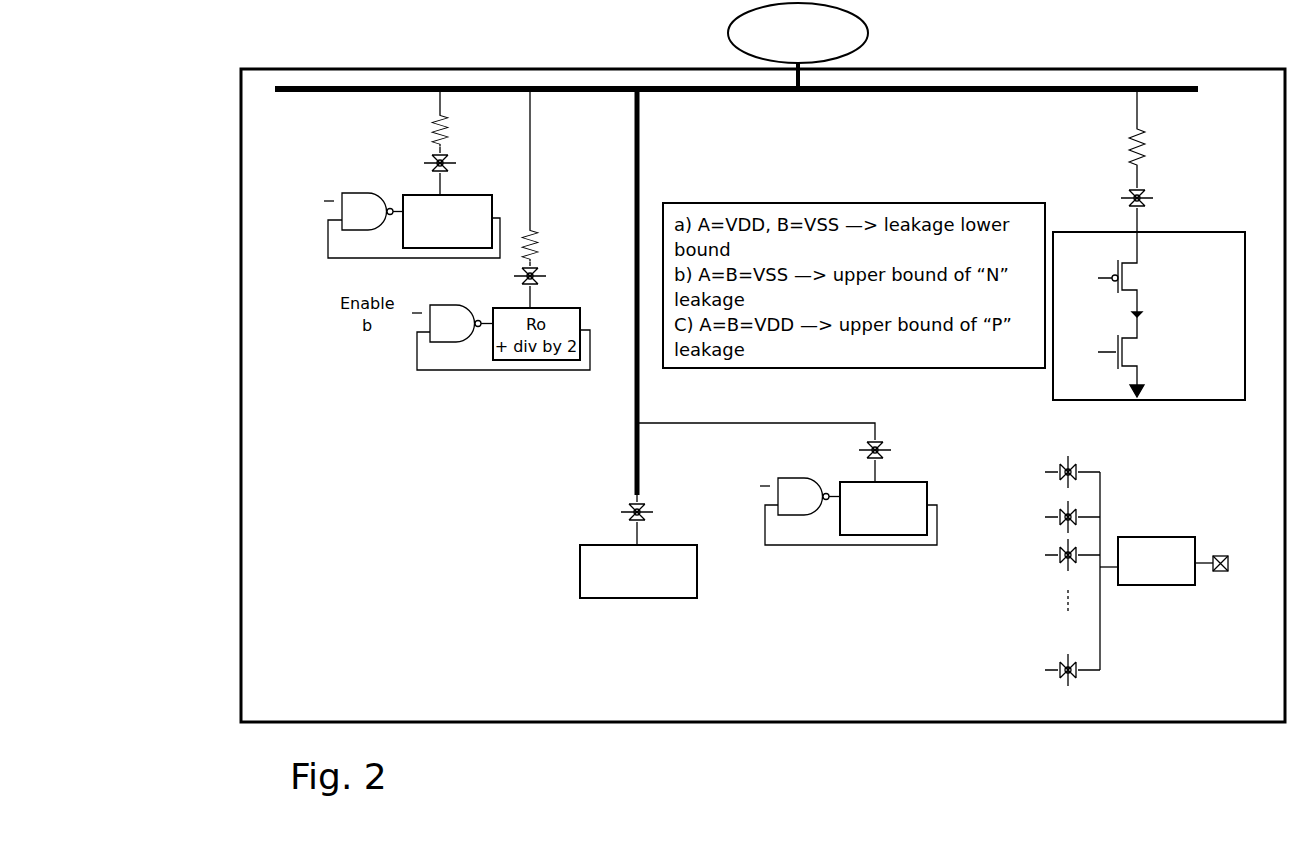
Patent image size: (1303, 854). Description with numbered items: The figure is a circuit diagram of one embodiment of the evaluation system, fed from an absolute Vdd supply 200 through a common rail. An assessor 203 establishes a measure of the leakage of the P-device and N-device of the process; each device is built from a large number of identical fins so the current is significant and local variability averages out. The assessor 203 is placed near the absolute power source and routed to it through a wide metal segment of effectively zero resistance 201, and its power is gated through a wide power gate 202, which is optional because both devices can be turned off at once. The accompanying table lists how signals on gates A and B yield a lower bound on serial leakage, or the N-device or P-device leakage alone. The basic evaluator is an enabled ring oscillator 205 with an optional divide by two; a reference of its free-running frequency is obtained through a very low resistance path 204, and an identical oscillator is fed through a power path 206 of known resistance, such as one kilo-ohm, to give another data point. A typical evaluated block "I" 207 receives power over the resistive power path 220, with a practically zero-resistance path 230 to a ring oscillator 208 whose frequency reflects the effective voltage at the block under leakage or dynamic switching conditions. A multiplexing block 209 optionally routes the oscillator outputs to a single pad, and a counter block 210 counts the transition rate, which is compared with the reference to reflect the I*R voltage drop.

The absolute Vdd supply 200 is at (823, 33).
The zero-resistance metal path 201 is at (1159, 138).
The power gate 202 is at (1169, 210).
The assessor 203 is at (1149, 316).
The very low resistance path 204 is at (443, 142).
The enabled ring oscillator 205 is at (381, 218).
The power path of known resistance 206 is at (557, 198).
The block "I" 207 is at (638, 561).
The ring oscillator 208 is at (821, 509).
The multiplexing block 209 is at (1045, 571).
The counter block 210 is at (1187, 586).
The power path 220 is at (658, 292).
The power path 230 is at (756, 416).